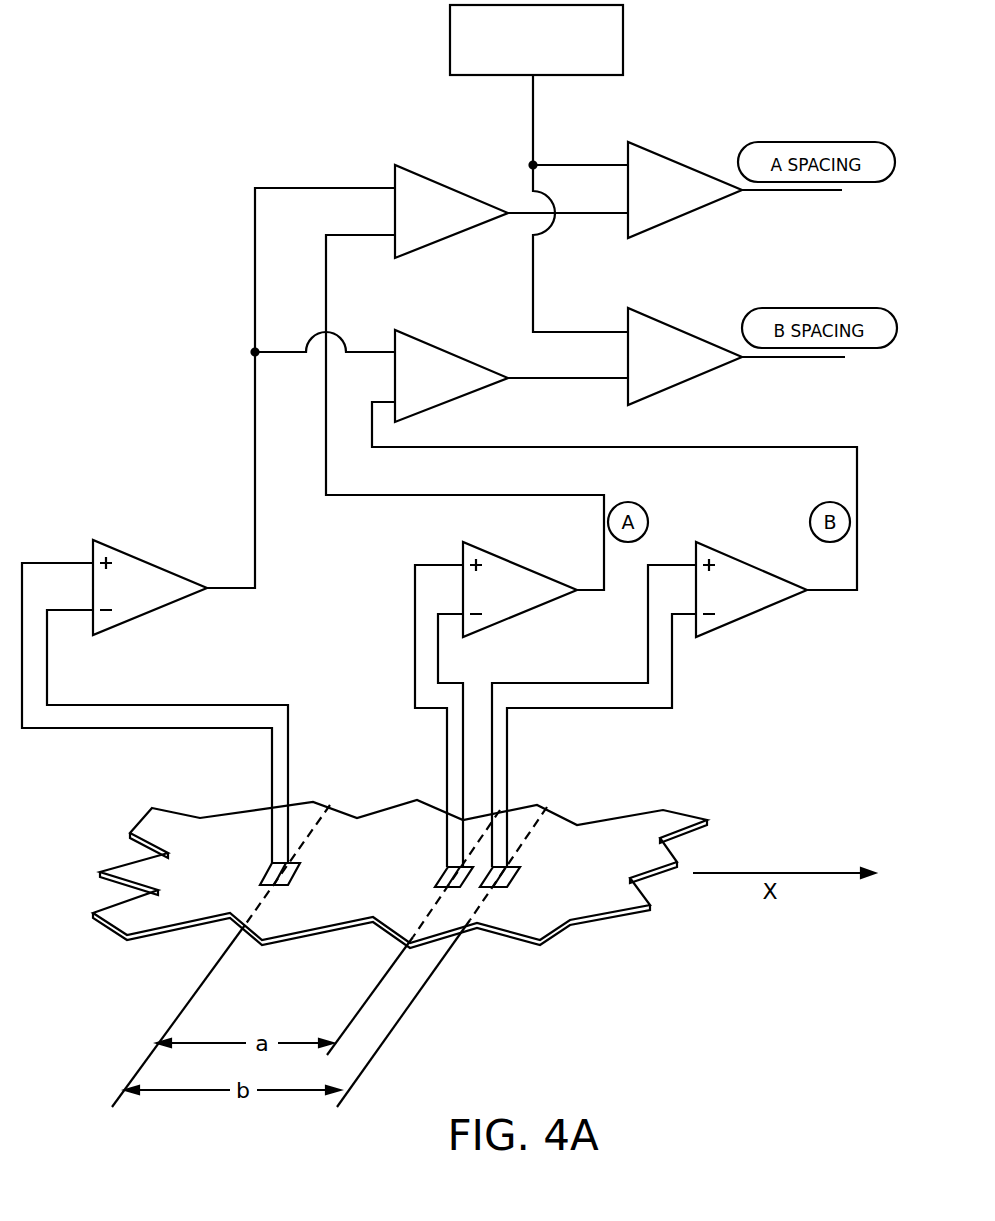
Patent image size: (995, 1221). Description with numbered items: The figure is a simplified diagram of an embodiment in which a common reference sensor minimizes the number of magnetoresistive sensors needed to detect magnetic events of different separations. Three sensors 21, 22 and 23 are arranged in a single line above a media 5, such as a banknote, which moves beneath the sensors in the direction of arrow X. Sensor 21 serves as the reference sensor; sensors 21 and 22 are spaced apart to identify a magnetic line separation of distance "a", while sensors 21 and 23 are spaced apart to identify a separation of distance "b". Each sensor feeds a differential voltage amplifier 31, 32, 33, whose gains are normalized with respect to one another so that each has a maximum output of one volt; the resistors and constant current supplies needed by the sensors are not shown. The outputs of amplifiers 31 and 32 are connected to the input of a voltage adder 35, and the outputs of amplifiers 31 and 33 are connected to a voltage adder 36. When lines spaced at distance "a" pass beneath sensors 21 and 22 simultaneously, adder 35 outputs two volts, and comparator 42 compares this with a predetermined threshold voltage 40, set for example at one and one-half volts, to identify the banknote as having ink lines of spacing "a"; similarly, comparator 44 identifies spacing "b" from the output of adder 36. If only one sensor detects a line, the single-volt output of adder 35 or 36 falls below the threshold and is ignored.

The threshold voltage 40 is at (625, 35).
The comparator 42 is at (662, 152).
The comparator 44 is at (662, 320).
The voltage adder 35 is at (435, 183).
The voltage adder 36 is at (440, 347).
The differential voltage amplifier 31 is at (135, 555).
The differential voltage amplifier 32 is at (517, 560).
The differential voltage amplifier 33 is at (728, 553).
The media 5 is at (180, 822).
The sensor 21 is at (267, 867).
The sensor 22 is at (443, 870).
The sensor 23 is at (520, 868).